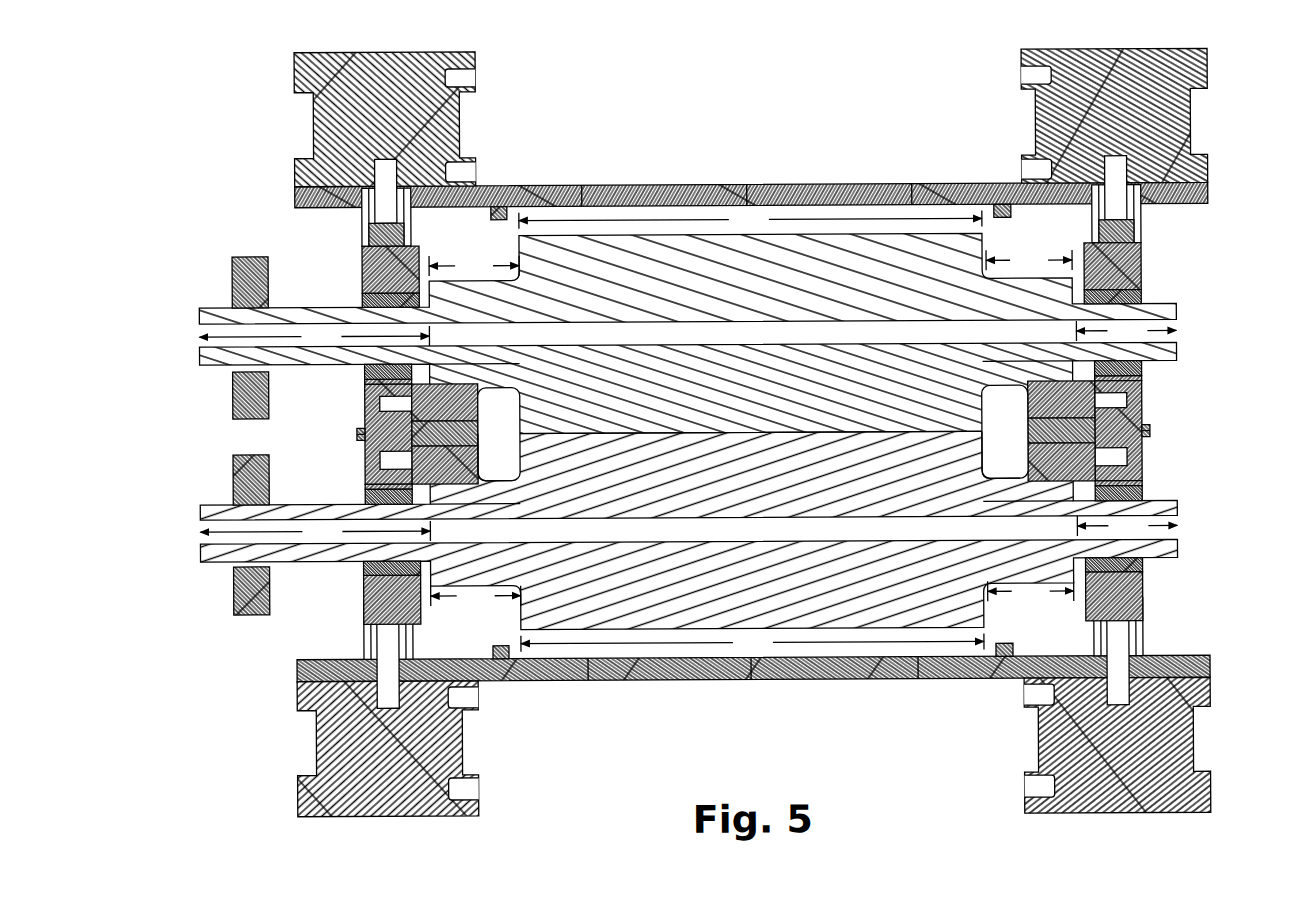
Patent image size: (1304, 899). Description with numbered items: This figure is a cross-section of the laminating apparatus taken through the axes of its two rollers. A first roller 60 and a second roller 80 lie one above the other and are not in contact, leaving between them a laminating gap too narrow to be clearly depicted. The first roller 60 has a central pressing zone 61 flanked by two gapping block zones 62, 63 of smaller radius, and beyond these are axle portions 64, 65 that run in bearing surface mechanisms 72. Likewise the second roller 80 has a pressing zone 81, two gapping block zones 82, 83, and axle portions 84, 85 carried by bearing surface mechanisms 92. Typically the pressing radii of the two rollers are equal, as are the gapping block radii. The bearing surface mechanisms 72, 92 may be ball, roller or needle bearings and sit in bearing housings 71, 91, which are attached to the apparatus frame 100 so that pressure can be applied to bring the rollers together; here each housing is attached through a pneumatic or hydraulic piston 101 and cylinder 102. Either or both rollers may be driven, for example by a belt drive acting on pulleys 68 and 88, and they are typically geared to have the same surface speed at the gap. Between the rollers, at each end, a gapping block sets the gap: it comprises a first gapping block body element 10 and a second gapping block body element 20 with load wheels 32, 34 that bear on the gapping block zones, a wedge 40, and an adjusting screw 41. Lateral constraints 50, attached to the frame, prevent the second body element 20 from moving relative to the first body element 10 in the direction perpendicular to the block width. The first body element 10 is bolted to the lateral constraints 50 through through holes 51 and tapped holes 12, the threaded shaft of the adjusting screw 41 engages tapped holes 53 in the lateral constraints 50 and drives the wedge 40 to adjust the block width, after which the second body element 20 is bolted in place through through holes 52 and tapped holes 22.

The first gapping block body element 10 is at (510, 387).
The tapped holes 12 is at (478, 405).
The second gapping block body element 20 is at (510, 483).
The tapped holes 22 is at (478, 458).
The load wheel 32 is at (492, 383).
The load wheel 34 is at (493, 483).
The wedge 40 is at (478, 433).
The adjusting screw 41 is at (358, 435).
The lateral constraints 50 is at (360, 400).
The through holes 51 is at (372, 408).
The through holes 52 is at (370, 459).
The tapped holes 53 is at (360, 428).
The first roller 60 is at (728, 298).
The pressing zone 61 is at (750, 219).
The gapping block zone 62 is at (474, 266).
The gapping block zone 63 is at (1029, 260).
The axle portion 64 is at (314, 337).
The axle portion 65 is at (1126, 330).
The pulley 68 is at (247, 273).
The bearing housing 71 is at (365, 263).
The bearing surface mechanism 72 is at (363, 298).
The second roller 80 is at (728, 491).
The pressing zone 81 is at (752, 642).
The gapping block zone 82 is at (476, 596).
The gapping block zone 83 is at (1031, 591).
The axle portion 84 is at (315, 532).
The axle portion 85 is at (1127, 525).
The pulley 88 is at (242, 493).
The bearing housing 91 is at (373, 590).
The bearing surface mechanism 92 is at (365, 570).
The apparatus frame 100 is at (810, 185).
The piston 101 is at (362, 247).
The cylinder 102 is at (406, 57).